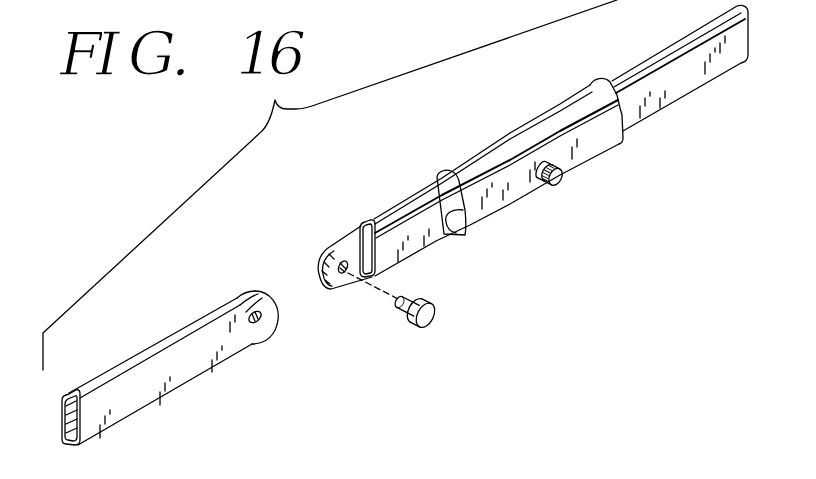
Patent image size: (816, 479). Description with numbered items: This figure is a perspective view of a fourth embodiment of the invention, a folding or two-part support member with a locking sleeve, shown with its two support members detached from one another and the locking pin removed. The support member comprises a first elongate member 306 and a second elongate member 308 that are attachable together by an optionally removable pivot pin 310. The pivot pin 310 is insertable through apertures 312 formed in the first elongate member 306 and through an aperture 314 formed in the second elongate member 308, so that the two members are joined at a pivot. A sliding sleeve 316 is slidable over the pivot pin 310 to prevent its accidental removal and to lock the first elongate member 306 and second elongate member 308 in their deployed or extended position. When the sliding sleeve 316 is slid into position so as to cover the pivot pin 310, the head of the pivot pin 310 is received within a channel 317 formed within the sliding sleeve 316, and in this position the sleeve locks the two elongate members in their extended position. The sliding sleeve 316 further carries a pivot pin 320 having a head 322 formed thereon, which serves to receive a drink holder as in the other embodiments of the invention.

The first elongate member 306 is at (137, 355).
The second elongate member 308 is at (679, 34).
The pivot pin 310 is at (427, 320).
The apertures 312 is at (262, 328).
The aperture 314 is at (342, 253).
The sliding sleeve 316 is at (483, 148).
The channel 317 is at (452, 216).
The pivot pin 320 is at (540, 177).
The head 322 is at (566, 180).